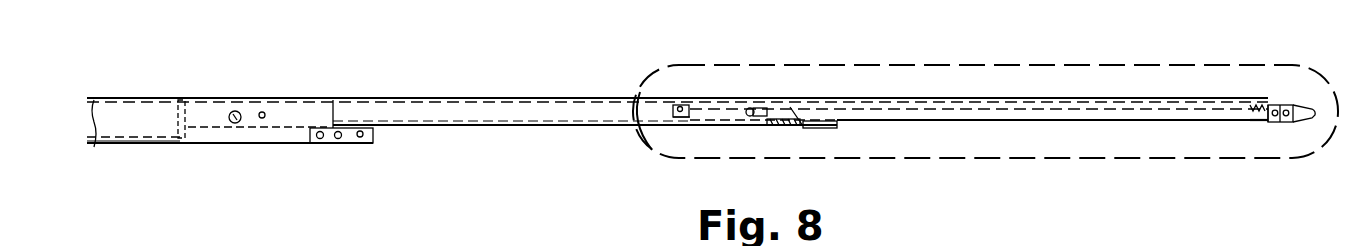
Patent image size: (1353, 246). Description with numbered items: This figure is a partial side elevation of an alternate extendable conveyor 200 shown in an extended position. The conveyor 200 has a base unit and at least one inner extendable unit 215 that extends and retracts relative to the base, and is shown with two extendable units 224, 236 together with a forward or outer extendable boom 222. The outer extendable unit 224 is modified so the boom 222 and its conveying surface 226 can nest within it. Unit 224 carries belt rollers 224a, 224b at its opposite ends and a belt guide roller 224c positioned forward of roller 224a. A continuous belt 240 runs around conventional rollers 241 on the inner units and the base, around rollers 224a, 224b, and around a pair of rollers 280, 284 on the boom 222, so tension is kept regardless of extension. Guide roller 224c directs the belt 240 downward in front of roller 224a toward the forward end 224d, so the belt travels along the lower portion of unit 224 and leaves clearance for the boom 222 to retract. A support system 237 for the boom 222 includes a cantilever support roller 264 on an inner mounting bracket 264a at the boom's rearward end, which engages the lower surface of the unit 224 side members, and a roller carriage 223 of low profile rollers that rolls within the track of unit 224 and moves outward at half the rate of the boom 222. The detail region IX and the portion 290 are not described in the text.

The extendable conveyor 200 is at (277, 31).
The extendable unit 215 is at (122, 82).
The extendable boom 222 is at (1033, 122).
The roller carriage 223 is at (790, 127).
The outer extendable unit 224 is at (468, 127).
The belt roller 224a is at (233, 113).
The forward belt roller 224b is at (803, 117).
The belt guide roller 224c is at (262, 113).
The forward end 224d is at (820, 125).
The conveying surface 226 is at (970, 103).
The extendable unit 236 is at (130, 143).
The support system 237 is at (680, 138).
The continuous belt 240 is at (385, 98).
The conventional rollers 241 is at (308, 143).
The cantilever support roller 264 is at (673, 105).
The inner mounting bracket 264a is at (683, 117).
The roller 280 is at (755, 105).
The roller 284 is at (1263, 105).
The end portion 290 is at (1276, 183).
The detail view IX is at (1063, 158).